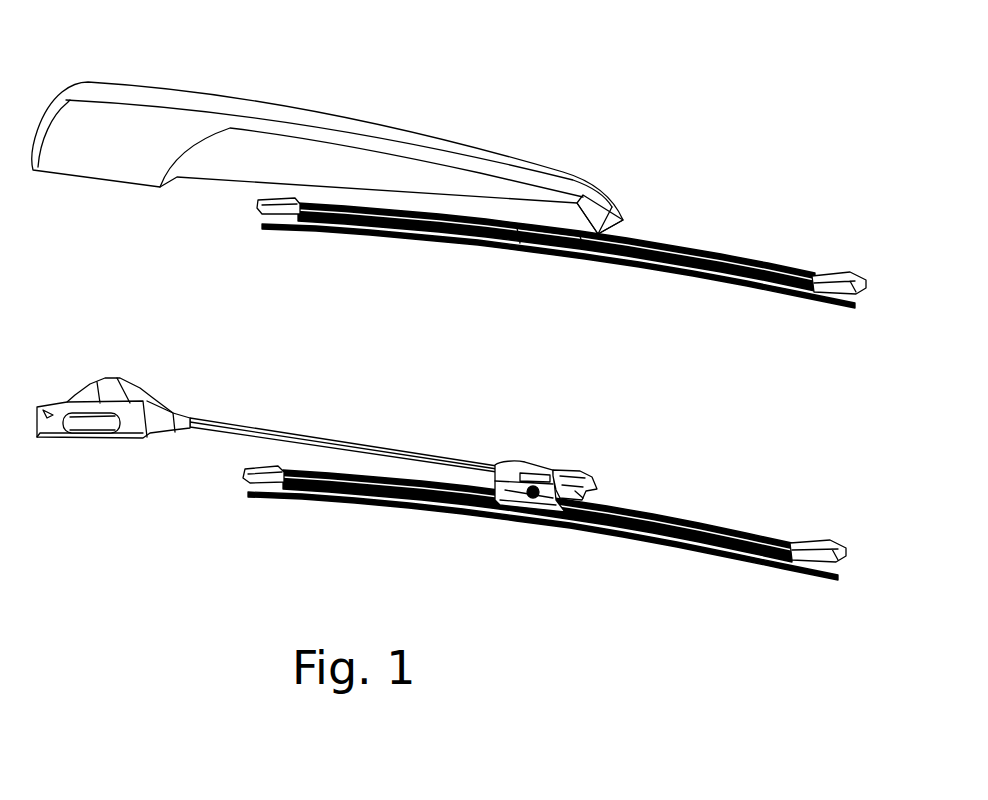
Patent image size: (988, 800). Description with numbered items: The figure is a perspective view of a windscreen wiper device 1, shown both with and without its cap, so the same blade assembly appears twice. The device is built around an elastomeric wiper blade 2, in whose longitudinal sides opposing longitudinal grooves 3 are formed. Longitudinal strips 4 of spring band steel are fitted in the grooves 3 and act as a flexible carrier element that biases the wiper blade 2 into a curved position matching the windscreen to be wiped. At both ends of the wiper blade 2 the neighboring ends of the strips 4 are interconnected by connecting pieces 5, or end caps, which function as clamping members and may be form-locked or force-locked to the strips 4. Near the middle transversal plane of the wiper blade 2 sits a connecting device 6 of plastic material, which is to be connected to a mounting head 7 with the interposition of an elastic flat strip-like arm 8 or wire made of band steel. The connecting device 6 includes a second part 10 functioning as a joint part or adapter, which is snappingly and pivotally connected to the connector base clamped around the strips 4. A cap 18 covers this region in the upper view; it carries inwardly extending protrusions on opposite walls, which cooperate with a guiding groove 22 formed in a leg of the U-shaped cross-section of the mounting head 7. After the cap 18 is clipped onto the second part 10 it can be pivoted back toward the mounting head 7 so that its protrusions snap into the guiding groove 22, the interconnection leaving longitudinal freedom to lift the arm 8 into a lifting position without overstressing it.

The windscreen wiper device 1 is at (583, 79).
The elastomeric wiper blade 2 is at (787, 565).
The longitudinal grooves 3 is at (757, 262).
The longitudinal strips 4 is at (752, 528).
The connecting pieces 5 is at (258, 205).
The connecting device 6 is at (566, 444).
The mounting head 7 is at (50, 440).
The arm 8 is at (373, 448).
The second part 10 is at (535, 520).
The cap 18 is at (142, 117).
The guiding groove 22 is at (100, 422).